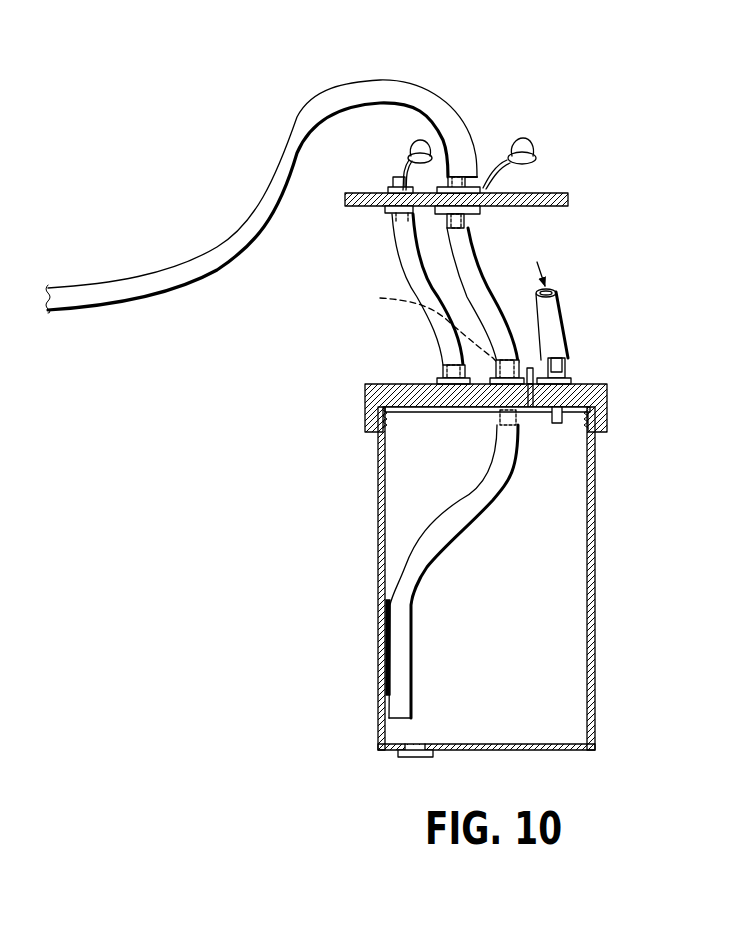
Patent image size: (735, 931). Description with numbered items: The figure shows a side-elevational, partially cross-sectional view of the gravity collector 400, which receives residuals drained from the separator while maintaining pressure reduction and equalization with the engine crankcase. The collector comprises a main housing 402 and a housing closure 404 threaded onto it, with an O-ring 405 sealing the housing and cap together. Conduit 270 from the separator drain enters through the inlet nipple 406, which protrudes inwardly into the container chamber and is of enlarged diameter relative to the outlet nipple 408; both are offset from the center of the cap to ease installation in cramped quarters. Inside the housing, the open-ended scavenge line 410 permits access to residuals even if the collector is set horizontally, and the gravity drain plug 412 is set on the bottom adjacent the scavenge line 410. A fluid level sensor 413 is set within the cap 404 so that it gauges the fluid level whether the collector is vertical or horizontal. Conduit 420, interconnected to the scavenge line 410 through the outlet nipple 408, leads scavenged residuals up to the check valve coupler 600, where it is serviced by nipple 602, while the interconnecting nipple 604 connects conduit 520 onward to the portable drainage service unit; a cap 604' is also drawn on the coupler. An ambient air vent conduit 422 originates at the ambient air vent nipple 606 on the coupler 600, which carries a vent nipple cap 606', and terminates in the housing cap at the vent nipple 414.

The conduit 520 is at (410, 82).
The vent nipple cap 606' is at (371, 122).
The interconnecting nipple 604 is at (479, 147).
The cap fitting 604' is at (542, 136).
The check valve coupler 600 is at (487, 145).
The ambient air vent nipple 606 is at (364, 186).
The nipple 602 is at (480, 211).
The ambient air vent conduit 422 is at (410, 272).
The conduit 420 is at (480, 270).
The conduit 270 is at (560, 300).
The outlet nipple 408 is at (415, 332).
The fluid level sensor 413 is at (533, 370).
The vent nipple 414 is at (440, 380).
The housing closure 404 is at (395, 384).
The O-ring 405 is at (594, 412).
The inlet nipple 406 is at (560, 418).
The gravity collector 400 is at (507, 579).
The scavenge line 410 is at (438, 543).
The main housing 402 is at (597, 666).
The gravity drain plug 412 is at (414, 758).